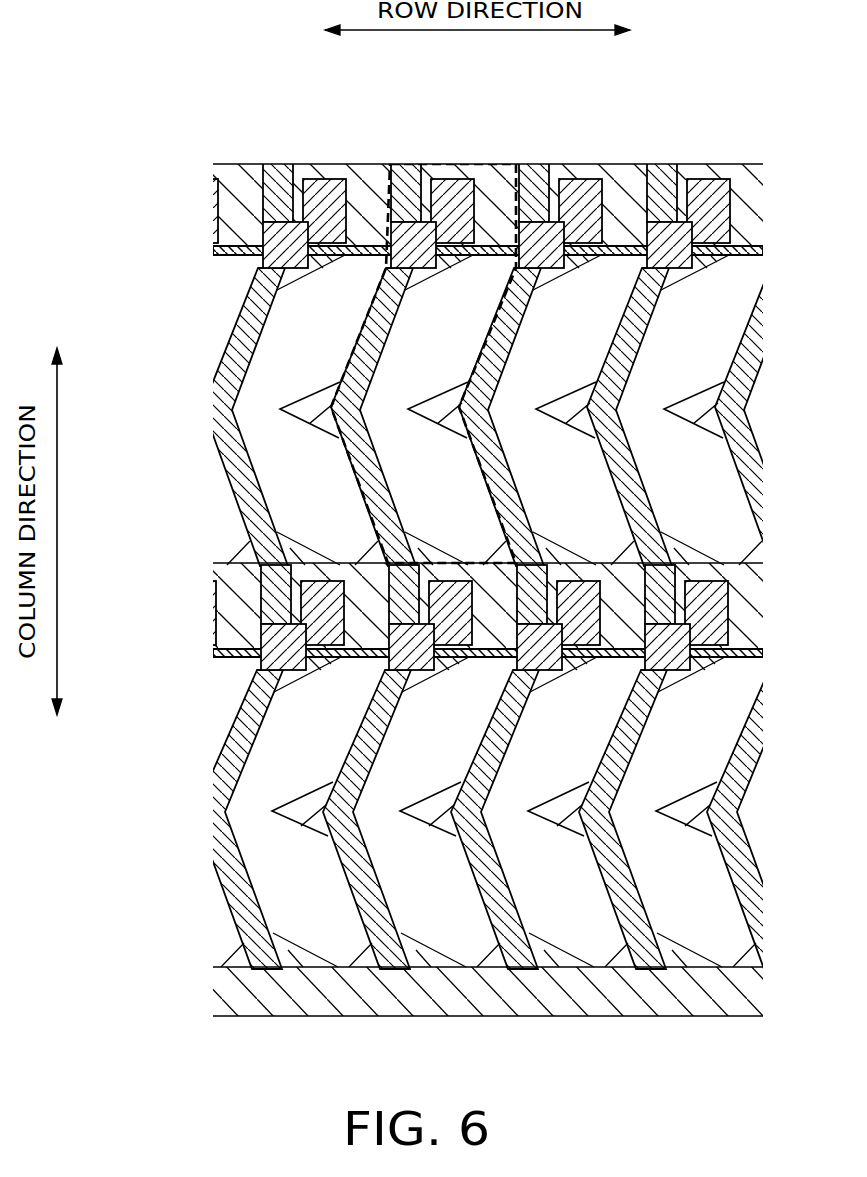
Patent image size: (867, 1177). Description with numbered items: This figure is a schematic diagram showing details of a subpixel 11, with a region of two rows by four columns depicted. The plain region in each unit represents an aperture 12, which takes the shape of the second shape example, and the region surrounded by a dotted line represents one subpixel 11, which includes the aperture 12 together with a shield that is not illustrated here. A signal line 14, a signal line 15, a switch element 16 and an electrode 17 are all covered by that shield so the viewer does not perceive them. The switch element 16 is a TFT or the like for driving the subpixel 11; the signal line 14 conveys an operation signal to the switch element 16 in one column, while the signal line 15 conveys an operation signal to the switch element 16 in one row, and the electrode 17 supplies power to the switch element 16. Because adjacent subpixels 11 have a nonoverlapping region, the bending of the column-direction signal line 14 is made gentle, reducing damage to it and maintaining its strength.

The subpixel 11 is at (310, 395).
The aperture 12 is at (393, 456).
The signal line 14 is at (362, 325).
The signal line 15 is at (355, 247).
The switch element 16 is at (412, 228).
The electrode 17 is at (458, 243).